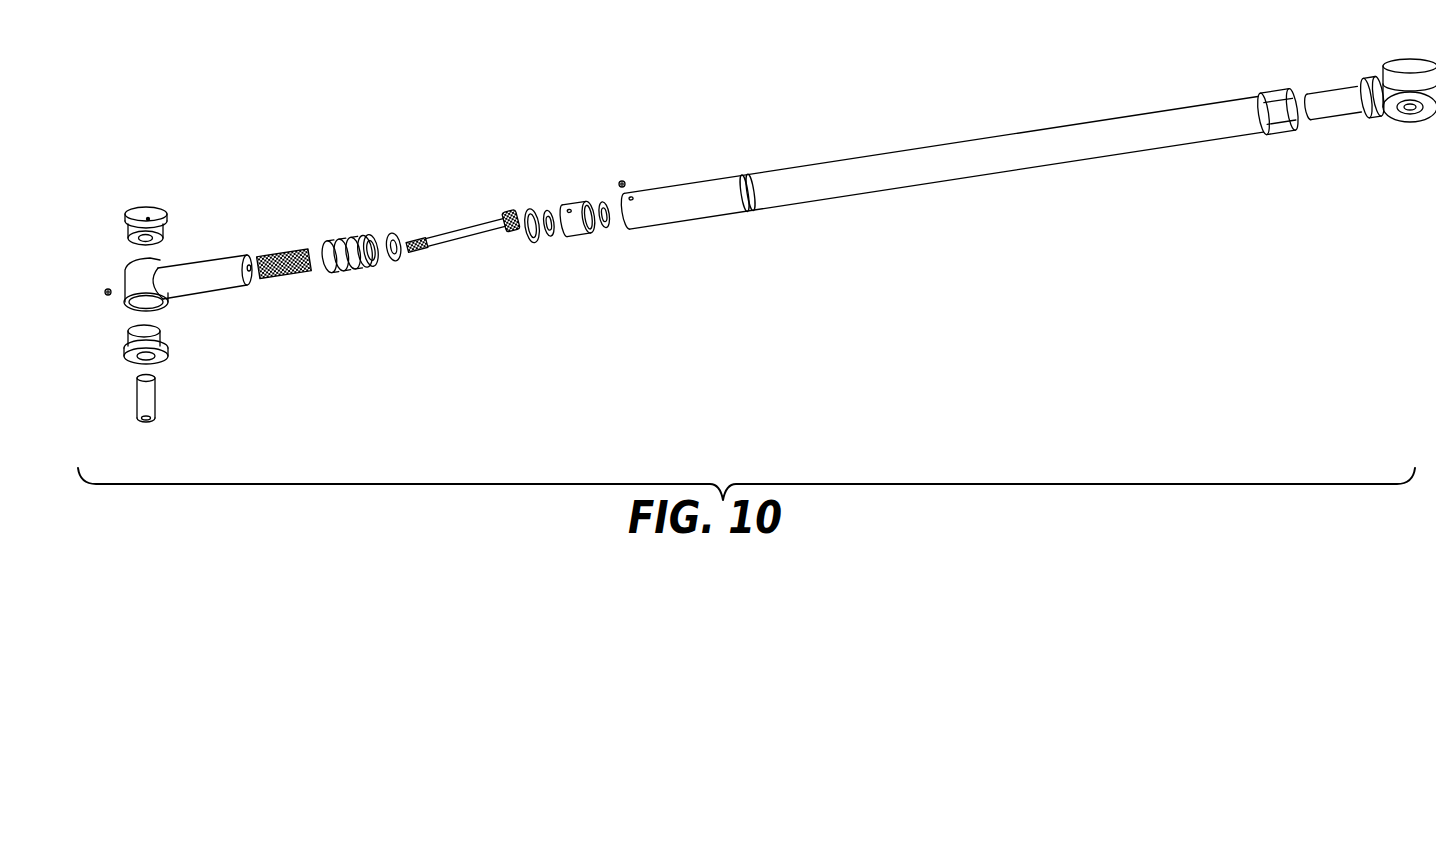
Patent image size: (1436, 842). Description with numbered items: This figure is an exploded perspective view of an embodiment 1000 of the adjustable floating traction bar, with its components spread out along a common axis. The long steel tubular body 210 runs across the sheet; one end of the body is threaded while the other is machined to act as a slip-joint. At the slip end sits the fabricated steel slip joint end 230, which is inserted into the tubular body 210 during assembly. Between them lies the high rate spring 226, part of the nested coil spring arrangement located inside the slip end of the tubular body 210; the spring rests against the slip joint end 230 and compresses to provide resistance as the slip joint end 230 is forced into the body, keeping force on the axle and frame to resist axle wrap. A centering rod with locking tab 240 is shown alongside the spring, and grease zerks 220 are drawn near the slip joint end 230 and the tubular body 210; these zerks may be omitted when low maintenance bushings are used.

The tie rod assembly 1000 is at (218, 110).
The tubular body 210 is at (1005, 142).
The grease zerks 220 is at (111, 288).
The high rate spring 226 is at (360, 237).
The steel slip joint end 230 is at (200, 286).
The centering rod with locking tab 240 is at (478, 226).